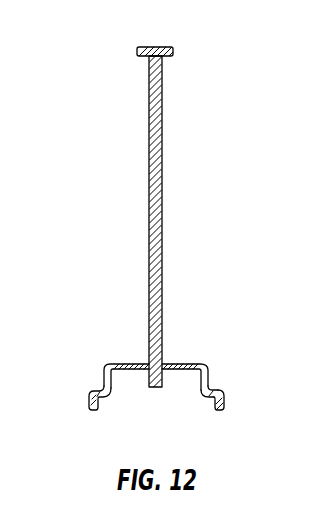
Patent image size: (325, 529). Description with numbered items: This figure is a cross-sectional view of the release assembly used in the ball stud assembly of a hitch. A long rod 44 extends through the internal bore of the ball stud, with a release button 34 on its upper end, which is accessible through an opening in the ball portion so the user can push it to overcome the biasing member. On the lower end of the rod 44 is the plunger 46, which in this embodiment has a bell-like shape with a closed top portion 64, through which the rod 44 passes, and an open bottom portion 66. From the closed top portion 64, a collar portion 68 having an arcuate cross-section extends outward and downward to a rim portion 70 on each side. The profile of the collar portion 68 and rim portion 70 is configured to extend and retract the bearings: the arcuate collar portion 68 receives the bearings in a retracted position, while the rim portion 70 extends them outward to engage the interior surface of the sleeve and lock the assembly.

The release button 34 is at (142, 47).
The rod 44 is at (150, 218).
The plunger 46 is at (88, 398).
The closed top portion 64 is at (172, 362).
The open bottom portion 66 is at (157, 380).
The collar portion 68 is at (207, 376).
The rim portion 70 is at (225, 400).